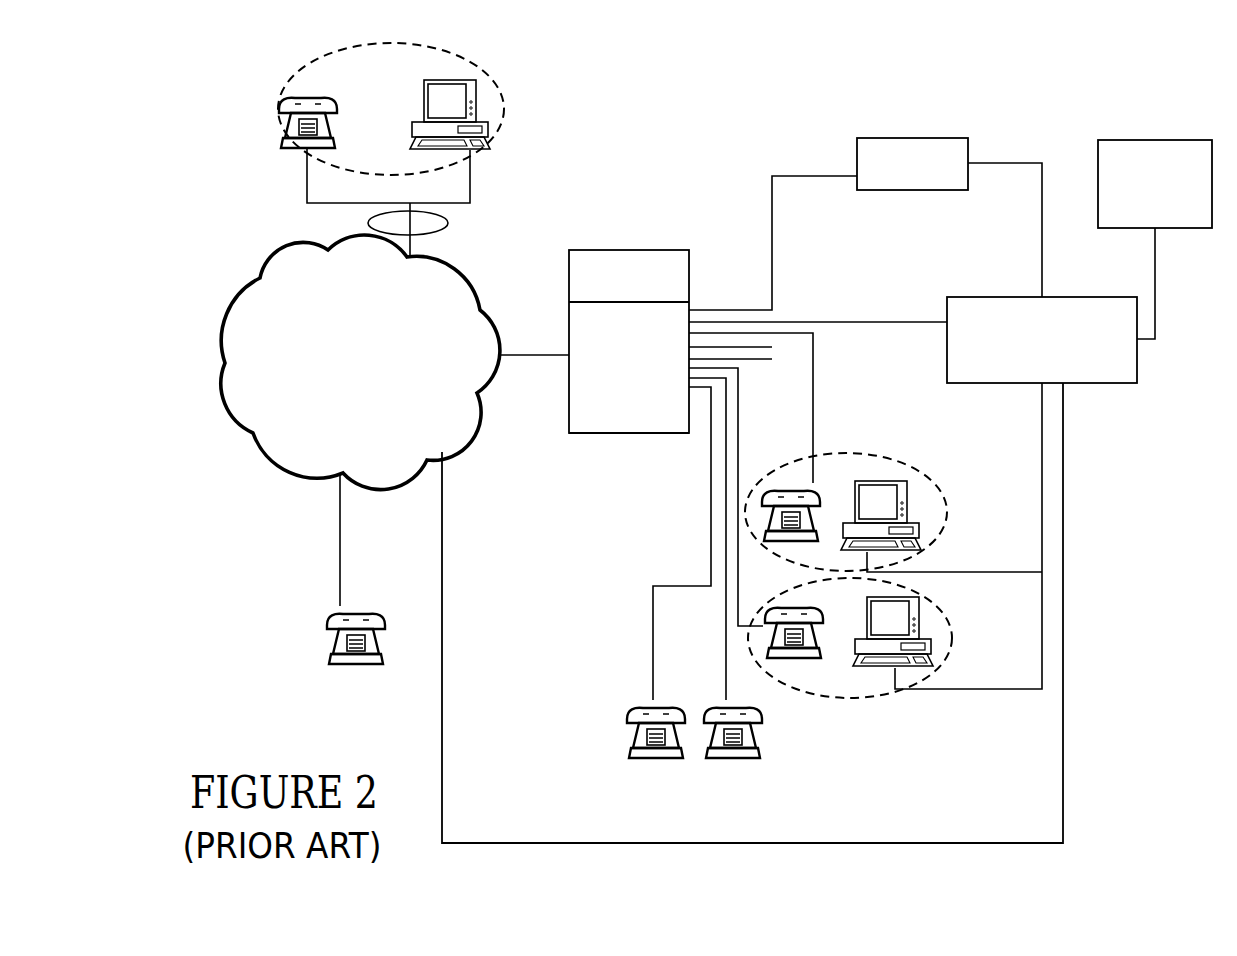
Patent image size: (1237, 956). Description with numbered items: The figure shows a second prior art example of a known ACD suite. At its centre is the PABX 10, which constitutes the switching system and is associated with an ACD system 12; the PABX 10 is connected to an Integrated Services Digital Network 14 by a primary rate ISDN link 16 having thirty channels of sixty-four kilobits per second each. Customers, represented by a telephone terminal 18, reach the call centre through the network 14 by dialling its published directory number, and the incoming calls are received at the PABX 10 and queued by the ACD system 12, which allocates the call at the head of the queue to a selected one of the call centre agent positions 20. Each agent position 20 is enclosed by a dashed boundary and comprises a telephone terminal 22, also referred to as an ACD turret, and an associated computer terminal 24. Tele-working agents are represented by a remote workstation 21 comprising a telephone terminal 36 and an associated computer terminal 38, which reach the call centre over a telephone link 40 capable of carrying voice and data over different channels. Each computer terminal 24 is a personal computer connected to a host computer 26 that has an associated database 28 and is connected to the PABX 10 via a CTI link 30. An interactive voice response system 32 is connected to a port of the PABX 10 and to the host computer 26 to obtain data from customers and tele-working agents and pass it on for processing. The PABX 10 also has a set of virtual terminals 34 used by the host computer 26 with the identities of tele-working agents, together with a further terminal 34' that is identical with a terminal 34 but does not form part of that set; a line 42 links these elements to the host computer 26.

The PABX 10 is at (620, 433).
The ACD system 12 is at (640, 250).
The Integrated Services Digital Network (ISDN) 14 is at (477, 427).
The primary rate ISDN link 16 is at (543, 355).
The telephone terminal 18 is at (327, 628).
The call centre agent position 20 is at (846, 450).
The remote workstation 21 is at (303, 165).
The telephone terminal 22 is at (787, 484).
The computer terminal 24 is at (913, 495).
The host computer 26 is at (995, 297).
The database 28 is at (1168, 228).
The CTI link 30 is at (882, 325).
The interactive voice response system (IVR) 32 is at (970, 142).
The virtual terminal 34 is at (746, 767).
The further terminal 34' is at (639, 752).
The telephone terminal 36 is at (278, 110).
The computer terminal 38 is at (483, 107).
The telephone link 40 is at (447, 225).
The local area network line 42 is at (1066, 730).